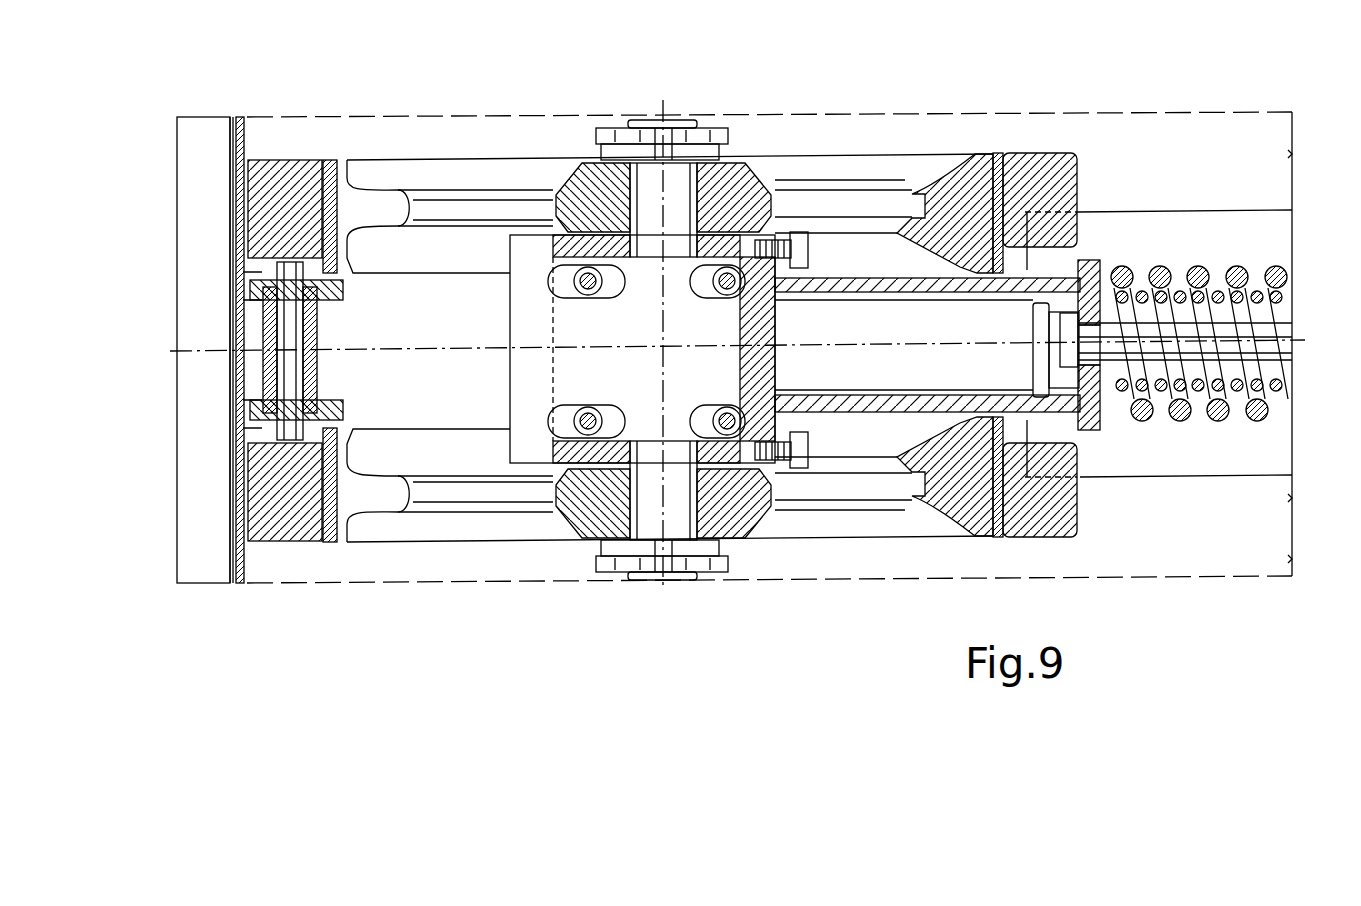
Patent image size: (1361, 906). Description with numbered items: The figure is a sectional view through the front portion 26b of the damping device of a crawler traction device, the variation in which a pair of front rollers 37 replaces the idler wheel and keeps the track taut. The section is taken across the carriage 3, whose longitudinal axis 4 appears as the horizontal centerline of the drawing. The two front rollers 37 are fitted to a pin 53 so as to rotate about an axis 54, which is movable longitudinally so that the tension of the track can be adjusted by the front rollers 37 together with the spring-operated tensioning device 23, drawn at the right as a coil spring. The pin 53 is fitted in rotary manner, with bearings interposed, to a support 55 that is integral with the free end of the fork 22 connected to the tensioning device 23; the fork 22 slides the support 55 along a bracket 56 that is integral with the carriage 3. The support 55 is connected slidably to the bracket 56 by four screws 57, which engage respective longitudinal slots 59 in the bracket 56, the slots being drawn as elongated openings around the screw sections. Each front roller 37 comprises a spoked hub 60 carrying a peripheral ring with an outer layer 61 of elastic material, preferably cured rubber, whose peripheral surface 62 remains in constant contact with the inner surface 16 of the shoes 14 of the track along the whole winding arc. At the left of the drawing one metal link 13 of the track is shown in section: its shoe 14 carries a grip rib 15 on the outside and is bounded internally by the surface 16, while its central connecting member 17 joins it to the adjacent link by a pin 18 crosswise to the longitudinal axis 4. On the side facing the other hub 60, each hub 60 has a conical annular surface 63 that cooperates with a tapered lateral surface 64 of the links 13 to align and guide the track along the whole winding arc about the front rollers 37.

The carriage 3 is at (1253, 478).
The longitudinal axis 4 is at (210, 351).
The metal link 13 is at (213, 115).
The shoe 14 is at (235, 227).
The grip rib 15 is at (200, 267).
The inner surface 16 is at (250, 138).
The central connecting member 17 is at (262, 416).
The pin 18 is at (283, 372).
The fork 22 is at (872, 283).
The spring-operated tensioning device 23 is at (1240, 258).
The front portion of damping device 26b is at (422, 128).
The front roller 37 is at (870, 158).
The pin 53 is at (675, 160).
The axis 54 is at (662, 108).
The support 55 is at (778, 347).
The bracket 56 is at (526, 283).
The screw 57 is at (556, 290).
The longitudinal slot 59 is at (597, 283).
The spoked hub 60 is at (452, 195).
The outer layer 61 is at (300, 160).
The peripheral surface 62 is at (1082, 182).
The conical annular surface 63 is at (332, 300).
The tapered lateral surface 64 is at (338, 428).